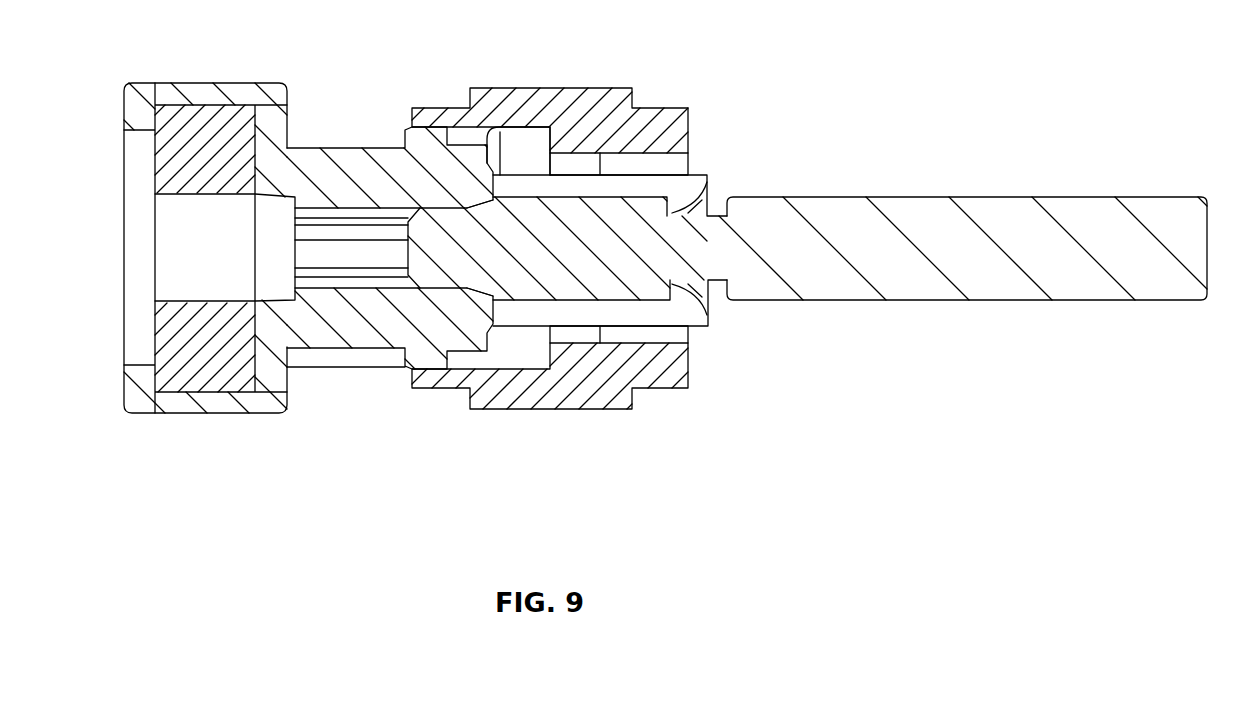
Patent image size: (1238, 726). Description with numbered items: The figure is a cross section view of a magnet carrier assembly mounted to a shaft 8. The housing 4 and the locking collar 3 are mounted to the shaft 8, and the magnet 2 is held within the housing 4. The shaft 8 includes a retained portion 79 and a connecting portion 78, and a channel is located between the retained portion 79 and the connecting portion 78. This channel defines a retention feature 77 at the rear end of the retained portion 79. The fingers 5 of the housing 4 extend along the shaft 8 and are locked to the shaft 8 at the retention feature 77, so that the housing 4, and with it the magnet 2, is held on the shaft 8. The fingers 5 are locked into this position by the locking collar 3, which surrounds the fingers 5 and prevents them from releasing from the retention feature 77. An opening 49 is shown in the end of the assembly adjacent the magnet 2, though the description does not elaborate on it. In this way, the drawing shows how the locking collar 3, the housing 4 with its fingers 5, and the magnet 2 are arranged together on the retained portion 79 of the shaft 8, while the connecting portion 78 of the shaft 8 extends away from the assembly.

The shaft 8 is at (984, 80).
The magnet 2 is at (195, 353).
The opening 49 is at (172, 246).
The housing 4 is at (343, 147).
The locking collar 3 is at (585, 87).
The fingers 5 is at (692, 313).
The retention feature 77 is at (712, 183).
The retained portion 79 is at (640, 300).
The connecting portion 78 is at (1073, 273).